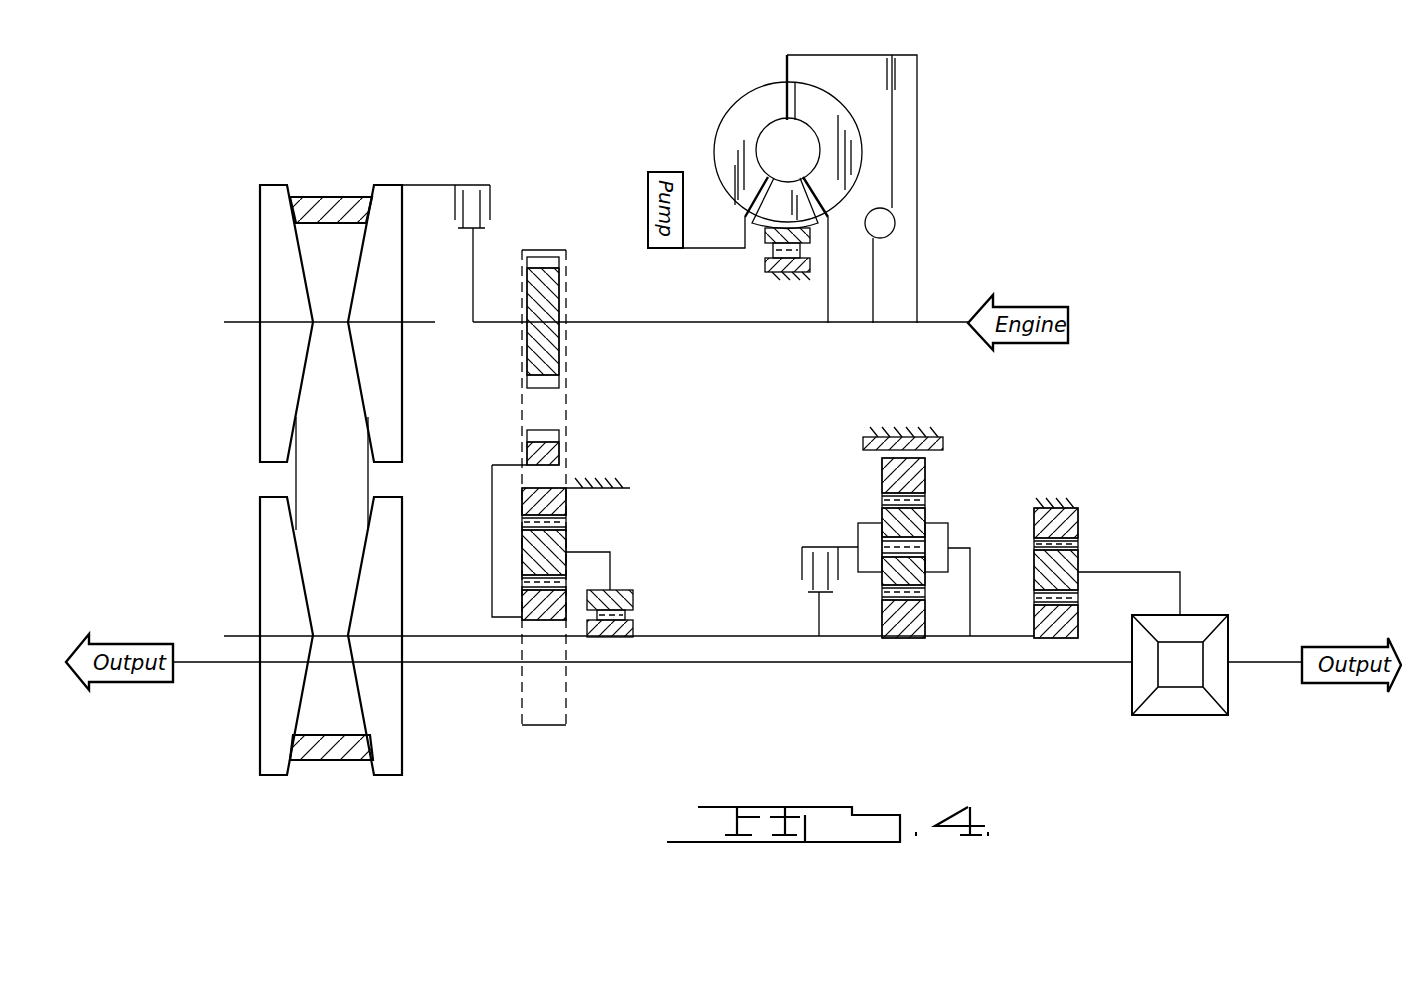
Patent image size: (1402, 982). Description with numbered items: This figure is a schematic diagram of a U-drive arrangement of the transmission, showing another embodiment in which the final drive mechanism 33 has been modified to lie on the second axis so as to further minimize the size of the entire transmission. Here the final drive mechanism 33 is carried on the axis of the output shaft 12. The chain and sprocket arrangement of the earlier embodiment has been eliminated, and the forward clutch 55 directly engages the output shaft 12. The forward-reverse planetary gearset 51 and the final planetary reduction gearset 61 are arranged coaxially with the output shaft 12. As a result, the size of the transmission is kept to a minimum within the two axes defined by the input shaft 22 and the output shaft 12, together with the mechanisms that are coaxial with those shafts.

The output shaft 12 is at (694, 634).
The input shaft 22 is at (621, 324).
The final drive mechanism 33 is at (1040, 468).
The forward-reverse planetary gearset 51 is at (860, 475).
The forward clutch 55 is at (800, 562).
The final planetary reduction gearset 61 is at (1100, 556).